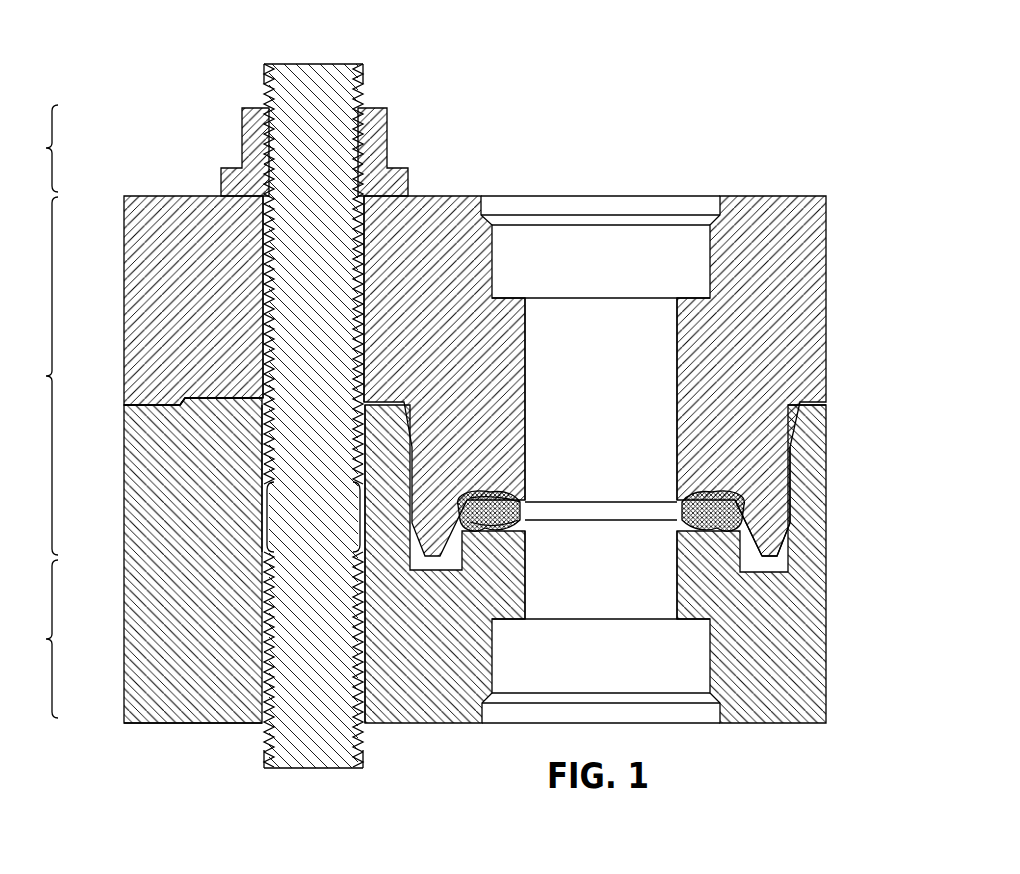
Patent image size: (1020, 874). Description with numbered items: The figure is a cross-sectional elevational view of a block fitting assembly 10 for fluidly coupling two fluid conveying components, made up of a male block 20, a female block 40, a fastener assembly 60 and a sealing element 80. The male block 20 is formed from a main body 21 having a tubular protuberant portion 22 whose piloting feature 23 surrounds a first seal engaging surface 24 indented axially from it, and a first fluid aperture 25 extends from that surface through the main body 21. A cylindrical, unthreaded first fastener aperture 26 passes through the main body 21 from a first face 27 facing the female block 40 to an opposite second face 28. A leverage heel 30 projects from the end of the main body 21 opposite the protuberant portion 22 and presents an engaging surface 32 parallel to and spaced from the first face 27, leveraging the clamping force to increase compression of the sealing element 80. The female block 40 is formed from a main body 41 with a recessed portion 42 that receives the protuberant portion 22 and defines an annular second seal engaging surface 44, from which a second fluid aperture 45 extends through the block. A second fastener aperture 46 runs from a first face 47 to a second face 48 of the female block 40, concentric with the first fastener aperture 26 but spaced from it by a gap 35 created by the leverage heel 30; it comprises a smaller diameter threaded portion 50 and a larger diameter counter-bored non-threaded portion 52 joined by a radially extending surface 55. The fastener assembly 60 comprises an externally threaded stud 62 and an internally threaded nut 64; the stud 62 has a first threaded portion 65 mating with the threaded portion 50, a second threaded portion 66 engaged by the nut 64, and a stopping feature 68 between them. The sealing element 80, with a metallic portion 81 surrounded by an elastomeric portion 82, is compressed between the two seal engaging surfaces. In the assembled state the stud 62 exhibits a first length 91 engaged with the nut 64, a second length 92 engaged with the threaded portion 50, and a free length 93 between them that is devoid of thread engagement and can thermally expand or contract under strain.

The block fitting assembly 10 is at (762, 104).
The male block 20 is at (806, 236).
The main body 21 is at (531, 350).
The protuberant portion 22 is at (792, 490).
The piloting feature 23 is at (790, 554).
The first seal engaging surface 24 is at (686, 512).
The first fluid aperture 25 is at (588, 339).
The first fastener aperture 26 is at (357, 277).
The first face 27 is at (800, 406).
The second face 28 is at (796, 192).
The leverage heel 30 is at (136, 403).
The engaging surface 32 is at (172, 400).
The gap 35 is at (238, 396).
The female block 40 is at (808, 610).
The main body 41 is at (507, 542).
The recessed portion 42 is at (762, 553).
The second seal engaging surface 44 is at (710, 525).
The second fluid aperture 45 is at (588, 599).
The second fastener aperture 46 is at (357, 668).
The first face 47 is at (152, 403).
The second face 48 is at (135, 724).
The threaded portion 50 is at (356, 579).
The non-threaded portion 52 is at (359, 482).
The radially extending surface 55 is at (367, 553).
The fastener assembly 60 is at (296, 385).
The stud 62 is at (340, 70).
The nut 64 is at (380, 157).
The first threaded portion 65 is at (368, 696).
The second threaded portion 66 is at (367, 123).
The stopping feature 68 is at (262, 480).
The sealing element 80 is at (520, 508).
The metallic portion 81 is at (514, 503).
The elastomeric portion 82 is at (510, 540).
The first length 91 is at (34, 148).
The second length 92 is at (34, 639).
The free length 93 is at (34, 376).